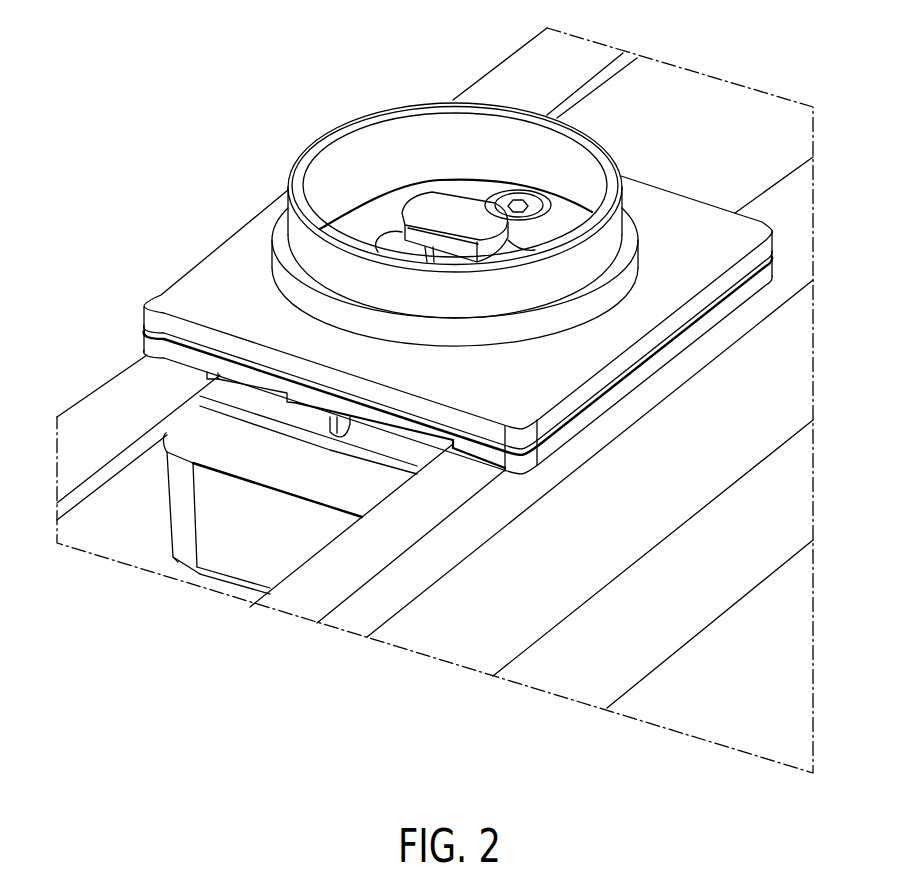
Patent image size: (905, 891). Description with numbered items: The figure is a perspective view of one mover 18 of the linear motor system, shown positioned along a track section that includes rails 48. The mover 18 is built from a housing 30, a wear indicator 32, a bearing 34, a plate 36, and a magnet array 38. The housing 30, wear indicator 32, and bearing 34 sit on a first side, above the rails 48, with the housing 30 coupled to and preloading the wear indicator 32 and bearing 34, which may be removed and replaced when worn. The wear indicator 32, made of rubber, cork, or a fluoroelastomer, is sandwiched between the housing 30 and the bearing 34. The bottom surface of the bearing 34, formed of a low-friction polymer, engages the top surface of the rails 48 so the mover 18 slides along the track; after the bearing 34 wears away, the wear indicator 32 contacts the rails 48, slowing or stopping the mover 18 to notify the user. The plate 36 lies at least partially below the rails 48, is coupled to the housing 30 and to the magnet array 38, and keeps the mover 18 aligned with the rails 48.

The mover 18 is at (421, 283).
The housing 30 is at (147, 302).
The wear indicator 32 is at (145, 328).
The bearing 34 is at (147, 349).
The plate 36 is at (293, 470).
The magnet array 38 is at (232, 581).
The rails 48 is at (505, 62).